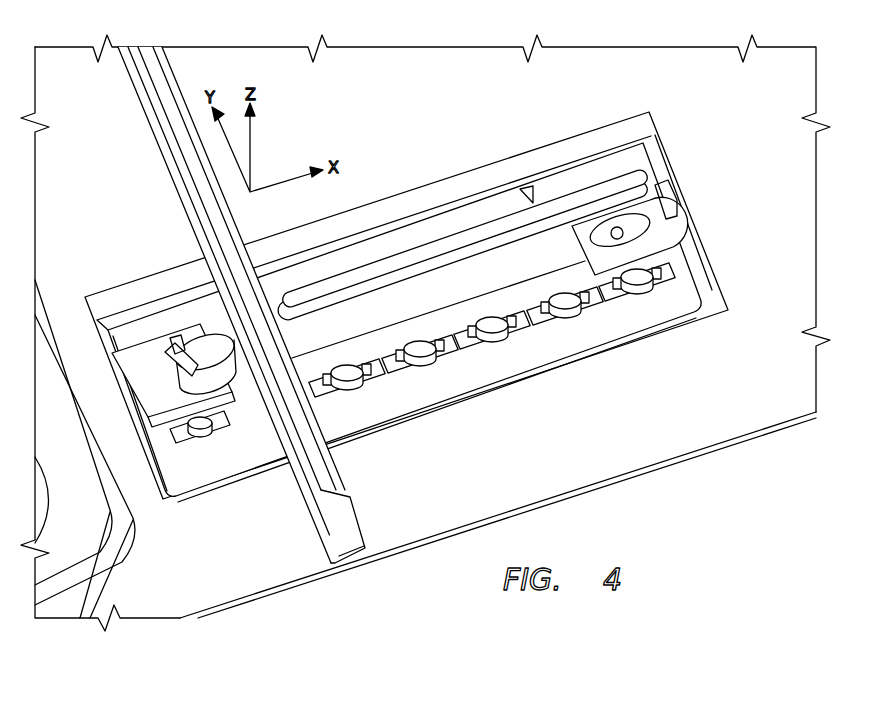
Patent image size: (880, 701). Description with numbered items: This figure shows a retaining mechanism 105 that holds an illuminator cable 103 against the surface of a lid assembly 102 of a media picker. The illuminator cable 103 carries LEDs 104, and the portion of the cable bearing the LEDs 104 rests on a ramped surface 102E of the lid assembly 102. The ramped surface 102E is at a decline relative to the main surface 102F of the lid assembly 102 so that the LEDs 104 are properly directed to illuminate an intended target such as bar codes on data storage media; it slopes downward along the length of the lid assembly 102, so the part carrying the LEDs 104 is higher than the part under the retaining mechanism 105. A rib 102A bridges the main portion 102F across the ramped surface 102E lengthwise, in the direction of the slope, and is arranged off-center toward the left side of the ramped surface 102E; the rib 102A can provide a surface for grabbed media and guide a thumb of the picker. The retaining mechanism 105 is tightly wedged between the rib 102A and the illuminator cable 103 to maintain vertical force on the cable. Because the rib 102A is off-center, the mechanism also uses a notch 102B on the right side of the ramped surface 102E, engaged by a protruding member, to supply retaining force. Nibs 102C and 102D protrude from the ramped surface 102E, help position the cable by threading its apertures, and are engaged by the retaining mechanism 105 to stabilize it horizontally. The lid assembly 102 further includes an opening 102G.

The lid assembly 102 is at (751, 438).
The rib 102A is at (322, 470).
The notch 102B is at (677, 198).
The nib 102C is at (172, 323).
The nib 102D is at (617, 227).
The ramped surface 102E is at (700, 278).
The main surface 102F is at (567, 460).
The opening 102G is at (430, 237).
The illuminator cable 103 is at (723, 312).
The LEDs 104 is at (352, 400).
The retaining mechanism 105 is at (506, 210).